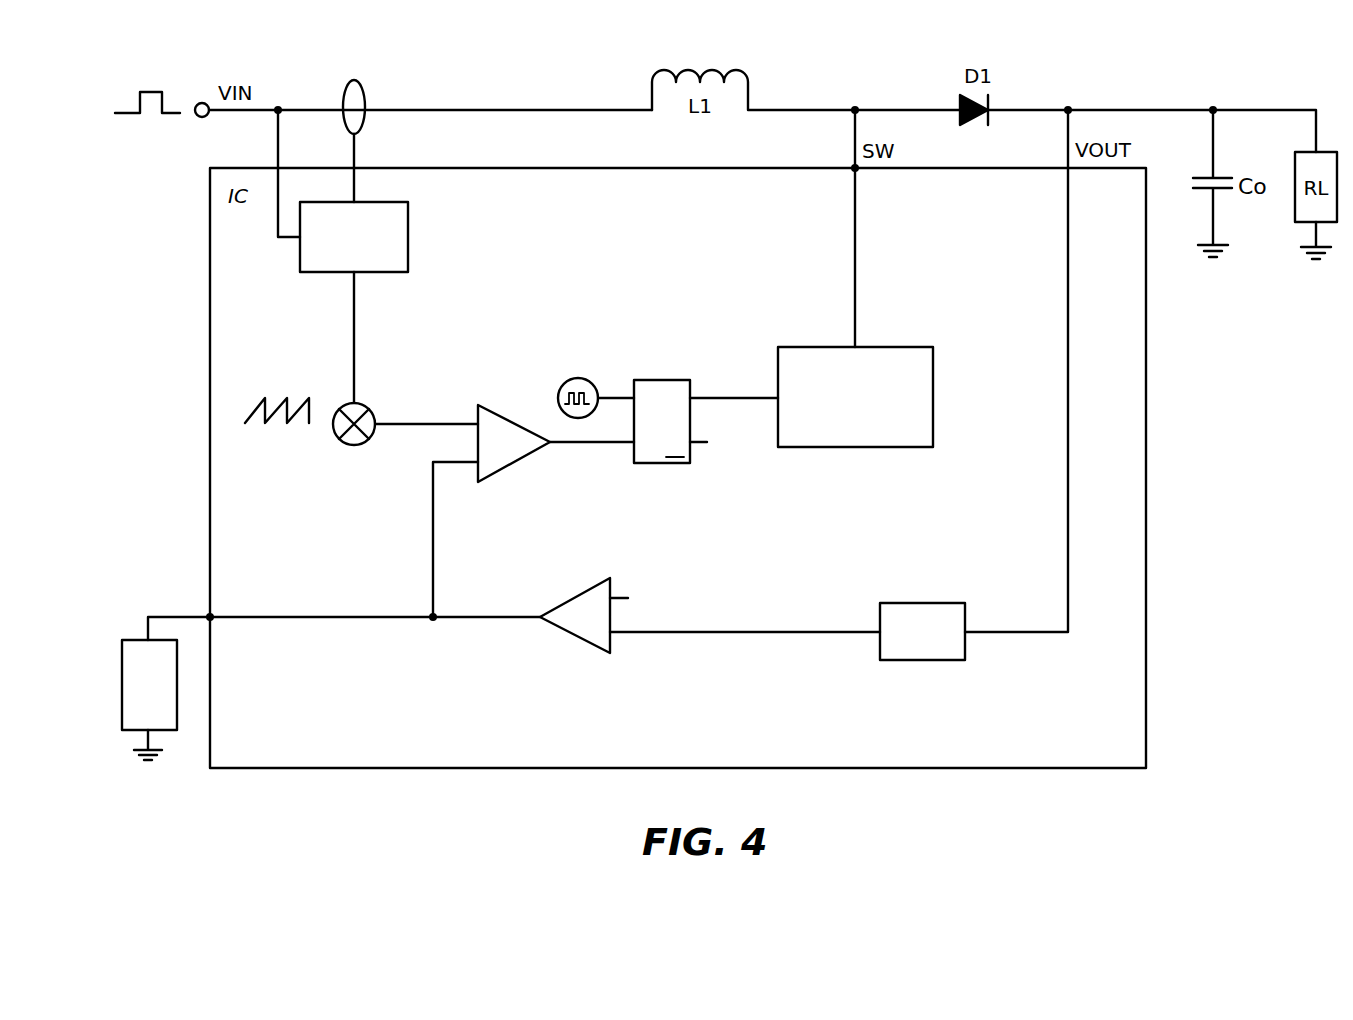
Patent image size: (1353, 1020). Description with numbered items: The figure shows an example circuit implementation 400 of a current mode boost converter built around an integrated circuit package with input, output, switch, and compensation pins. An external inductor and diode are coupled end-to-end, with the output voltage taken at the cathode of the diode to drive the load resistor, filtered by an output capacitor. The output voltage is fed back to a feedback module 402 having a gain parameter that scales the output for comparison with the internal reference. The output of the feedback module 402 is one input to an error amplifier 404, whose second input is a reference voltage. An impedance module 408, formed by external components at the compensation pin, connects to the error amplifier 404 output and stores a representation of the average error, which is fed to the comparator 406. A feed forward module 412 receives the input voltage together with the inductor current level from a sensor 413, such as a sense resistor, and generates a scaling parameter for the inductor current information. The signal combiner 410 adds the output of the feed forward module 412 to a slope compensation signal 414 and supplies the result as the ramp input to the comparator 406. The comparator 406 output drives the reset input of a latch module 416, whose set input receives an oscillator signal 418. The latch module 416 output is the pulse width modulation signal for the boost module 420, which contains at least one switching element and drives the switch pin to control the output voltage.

The circuit implementation 400 is at (526, 60).
The feedback module 402 is at (918, 603).
The error amplifier 404 is at (570, 593).
The comparator 406 is at (514, 415).
The impedance module 408 is at (120, 684).
The signal combiner 410 is at (362, 400).
The feed forward module 412 is at (410, 238).
The sensor 413 is at (362, 84).
The slope compensation signal 414 is at (279, 401).
The latch module 416 is at (658, 380).
The oscillator signal 418 is at (562, 390).
The boost module 420 is at (933, 395).